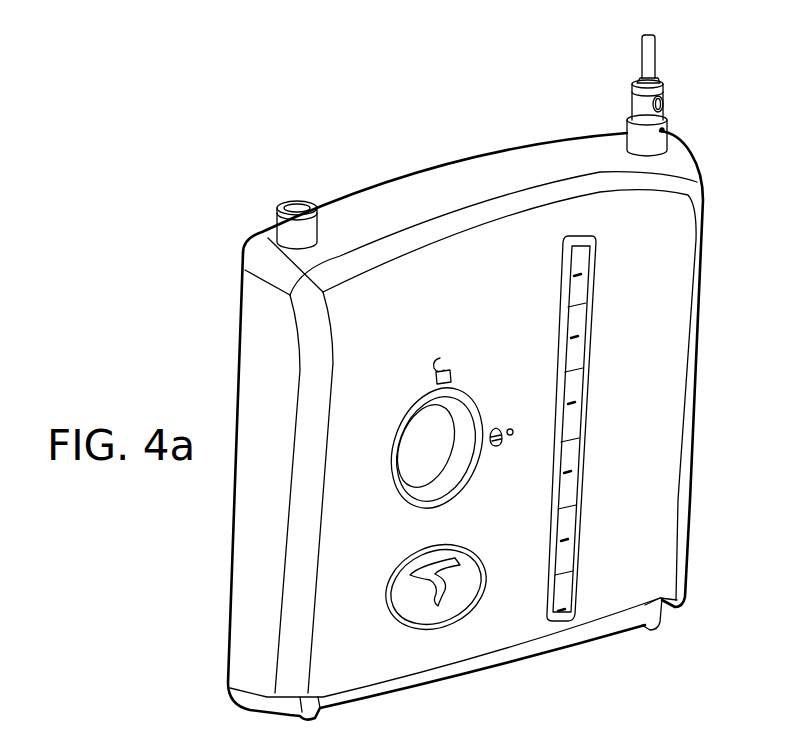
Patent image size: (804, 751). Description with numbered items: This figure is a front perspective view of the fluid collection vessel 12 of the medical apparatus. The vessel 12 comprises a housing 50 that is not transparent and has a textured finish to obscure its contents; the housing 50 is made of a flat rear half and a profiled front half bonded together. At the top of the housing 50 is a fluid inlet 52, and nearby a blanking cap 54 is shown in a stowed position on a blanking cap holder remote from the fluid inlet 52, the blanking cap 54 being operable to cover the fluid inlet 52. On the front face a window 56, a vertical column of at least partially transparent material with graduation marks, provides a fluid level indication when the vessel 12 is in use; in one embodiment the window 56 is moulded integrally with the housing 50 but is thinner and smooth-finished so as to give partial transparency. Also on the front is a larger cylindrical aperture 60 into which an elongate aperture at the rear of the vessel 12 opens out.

The fluid collection vessel 12 is at (212, 188).
The housing 50 is at (708, 248).
The fluid inlet 52 is at (668, 118).
The blanking cap 54 is at (300, 206).
The window 56 is at (591, 413).
The cylindrical aperture 60 is at (470, 392).